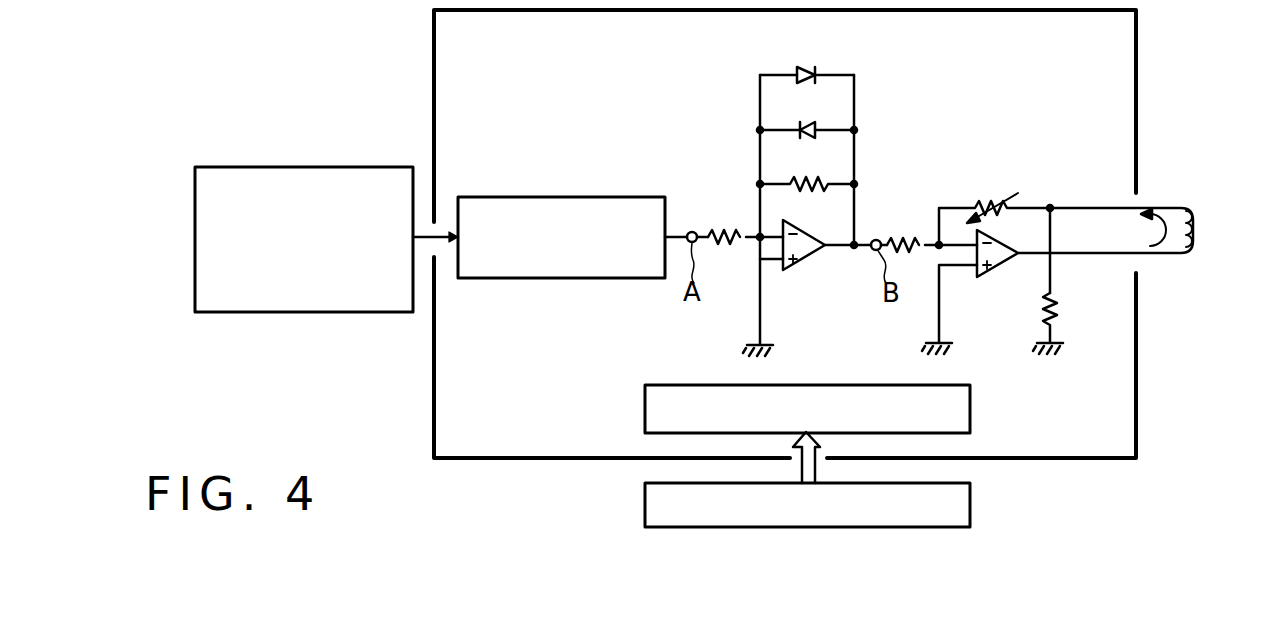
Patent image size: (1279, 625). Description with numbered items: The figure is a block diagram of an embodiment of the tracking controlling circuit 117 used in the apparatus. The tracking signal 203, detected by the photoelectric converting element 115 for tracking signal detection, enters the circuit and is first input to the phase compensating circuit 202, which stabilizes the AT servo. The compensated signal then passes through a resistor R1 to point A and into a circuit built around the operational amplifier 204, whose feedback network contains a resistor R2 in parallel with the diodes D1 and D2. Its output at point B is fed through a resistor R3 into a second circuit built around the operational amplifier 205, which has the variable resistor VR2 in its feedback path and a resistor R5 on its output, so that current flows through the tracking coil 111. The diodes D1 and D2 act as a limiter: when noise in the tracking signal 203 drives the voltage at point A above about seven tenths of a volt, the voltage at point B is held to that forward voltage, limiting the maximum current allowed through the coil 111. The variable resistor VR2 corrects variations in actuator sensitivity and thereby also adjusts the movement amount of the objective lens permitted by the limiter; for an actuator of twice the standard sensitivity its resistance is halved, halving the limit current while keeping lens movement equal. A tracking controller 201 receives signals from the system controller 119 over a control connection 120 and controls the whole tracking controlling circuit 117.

The tracking coil 111 is at (1196, 222).
The photoelectric converting element 115 is at (316, 167).
The tracking controlling circuit 117 is at (1137, 64).
The system controller 119 is at (645, 505).
The control signal line 120 is at (815, 470).
The tracking controller 201 is at (645, 408).
The phase compensating circuit 202 is at (597, 197).
The tracking signal 203 is at (423, 238).
The operational amplifier 204 is at (803, 270).
The operational amplifier 205 is at (990, 277).
The resistor R1 is at (724, 224).
The resistor R2 is at (807, 170).
The resistor R3 is at (903, 231).
The resistor R5 is at (1062, 323).
The diode D1 is at (807, 61).
The diode D2 is at (807, 116).
The variable resistor VR2 is at (994, 206).